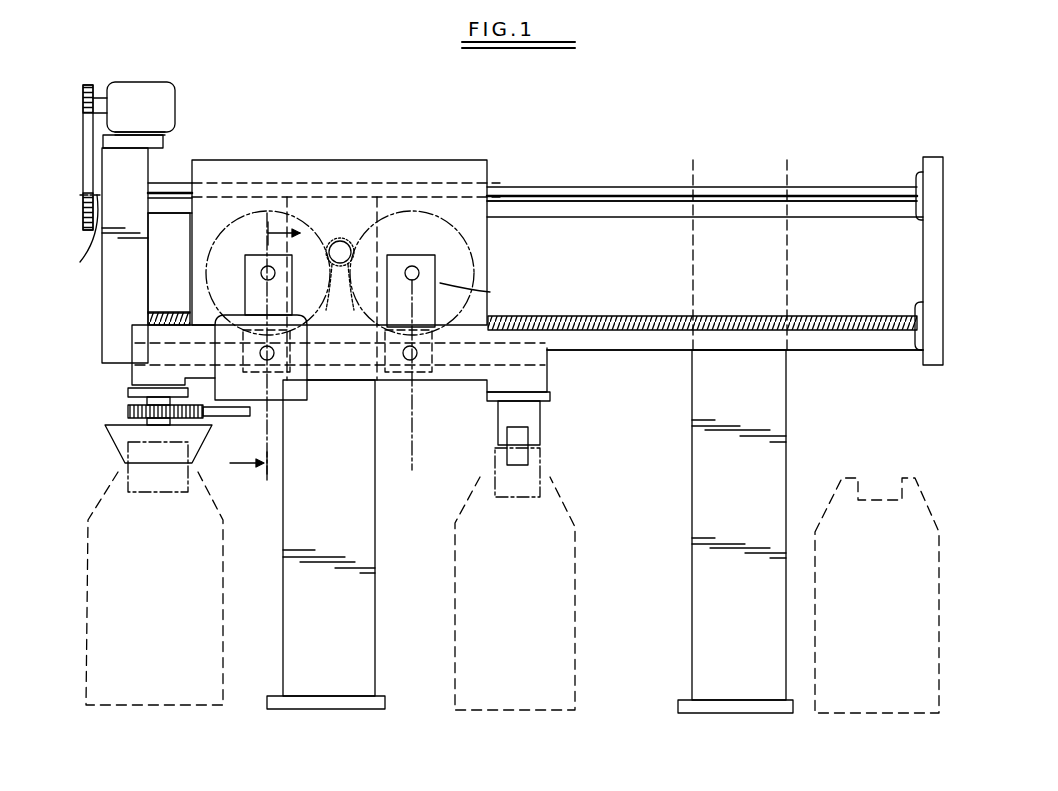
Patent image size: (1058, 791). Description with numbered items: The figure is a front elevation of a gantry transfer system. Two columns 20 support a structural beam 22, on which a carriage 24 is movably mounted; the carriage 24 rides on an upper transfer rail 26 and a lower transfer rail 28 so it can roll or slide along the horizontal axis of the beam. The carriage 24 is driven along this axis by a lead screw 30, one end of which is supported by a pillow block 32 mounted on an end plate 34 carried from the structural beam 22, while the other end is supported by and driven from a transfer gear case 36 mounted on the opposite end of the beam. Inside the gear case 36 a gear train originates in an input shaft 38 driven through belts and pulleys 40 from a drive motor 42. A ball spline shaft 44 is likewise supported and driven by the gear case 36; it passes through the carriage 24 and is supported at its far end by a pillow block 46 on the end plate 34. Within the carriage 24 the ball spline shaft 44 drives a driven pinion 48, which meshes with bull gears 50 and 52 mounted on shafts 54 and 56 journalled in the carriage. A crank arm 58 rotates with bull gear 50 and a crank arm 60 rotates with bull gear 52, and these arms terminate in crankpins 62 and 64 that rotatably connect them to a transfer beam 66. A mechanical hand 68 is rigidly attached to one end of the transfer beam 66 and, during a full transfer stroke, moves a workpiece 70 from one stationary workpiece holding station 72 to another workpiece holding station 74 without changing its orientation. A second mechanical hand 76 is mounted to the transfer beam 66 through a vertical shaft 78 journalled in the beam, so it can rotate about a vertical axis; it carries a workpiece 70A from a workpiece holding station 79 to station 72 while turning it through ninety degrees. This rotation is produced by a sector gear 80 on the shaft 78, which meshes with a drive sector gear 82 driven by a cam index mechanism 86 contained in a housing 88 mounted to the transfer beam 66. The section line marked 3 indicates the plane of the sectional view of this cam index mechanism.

The columns 20 is at (376, 607).
The structural beam 22 is at (535, 281).
The carriage 24 is at (490, 237).
The upper transfer rail 26 is at (858, 213).
The lower transfer rail 28 is at (846, 346).
The lead screw 30 is at (607, 316).
The pillow block 32 is at (915, 308).
The end plate 34 is at (932, 367).
The transfer gear case 36 is at (102, 298).
The input shaft 38 is at (77, 244).
The belts and pulleys 40 is at (88, 112).
The drive motor 42 is at (176, 92).
The ball spline shaft 44 is at (757, 187).
The pillow block 46 is at (918, 178).
The driven pinion 48 is at (343, 240).
The bull gear 50 is at (232, 225).
The bull gear 52 is at (412, 212).
The shaft 54 is at (265, 266).
The shaft 56 is at (420, 273).
The crank arm 58 is at (260, 273).
The crank arm 60 is at (490, 292).
The crankpin 62 is at (275, 355).
The crankpin 64 is at (412, 362).
The transfer beam 66 is at (548, 379).
The mechanical hand 68 is at (541, 420).
The workpiece 70 is at (542, 465).
The workpiece 70A is at (128, 462).
The workpiece holding station 72 is at (578, 530).
The workpiece holding station 74 is at (862, 716).
The second mechanical hand 76 is at (107, 445).
The vertical shaft 78 is at (128, 392).
The workpiece holding station 79 is at (86, 604).
The sector gear 80 is at (128, 411).
The drive sector gear 82 is at (220, 418).
The cam index mechanism 86 is at (212, 362).
The housing 88 is at (305, 402).
The section line 3- 3 is at (268, 359).